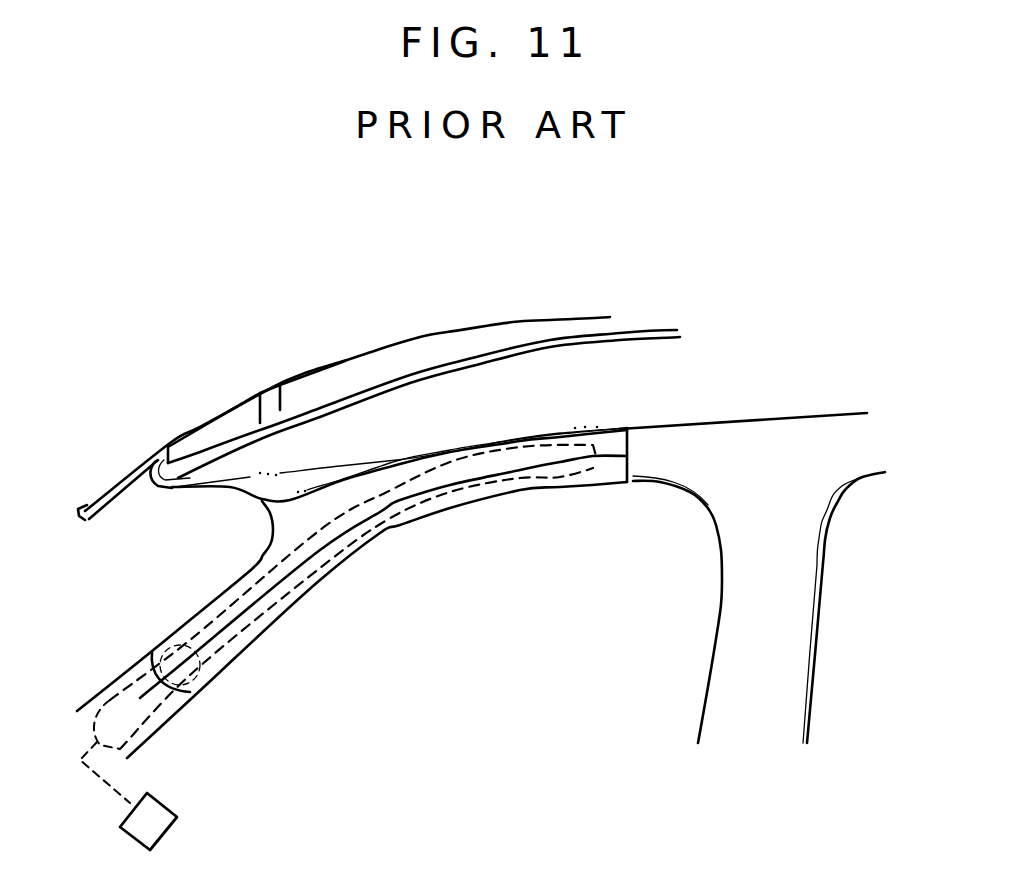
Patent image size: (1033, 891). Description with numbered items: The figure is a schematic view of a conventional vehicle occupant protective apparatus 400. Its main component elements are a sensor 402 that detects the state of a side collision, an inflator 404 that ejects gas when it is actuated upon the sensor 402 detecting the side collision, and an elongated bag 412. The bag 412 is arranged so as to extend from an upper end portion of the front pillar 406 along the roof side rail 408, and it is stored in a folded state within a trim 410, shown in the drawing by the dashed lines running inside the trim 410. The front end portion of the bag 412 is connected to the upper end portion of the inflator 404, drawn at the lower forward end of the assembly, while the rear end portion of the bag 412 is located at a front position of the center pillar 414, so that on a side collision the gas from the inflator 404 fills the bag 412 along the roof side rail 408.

The vehicle occupant protective apparatus 400 is at (377, 540).
The sensor 402 is at (177, 817).
The inflator 404 is at (125, 680).
The front pillar 406 is at (290, 606).
The roof side rail 408 is at (593, 483).
The trim 410 is at (324, 550).
The bag 412 is at (440, 501).
The center pillar 414 is at (722, 633).